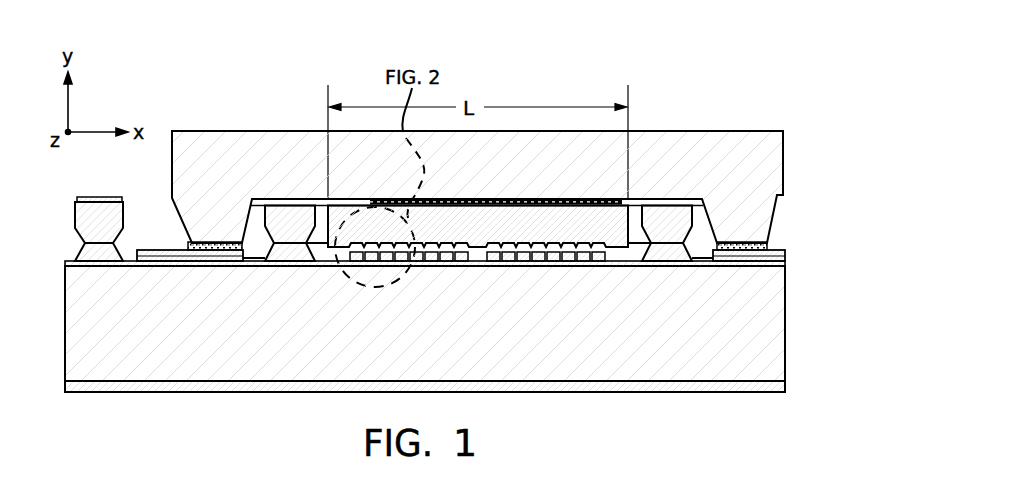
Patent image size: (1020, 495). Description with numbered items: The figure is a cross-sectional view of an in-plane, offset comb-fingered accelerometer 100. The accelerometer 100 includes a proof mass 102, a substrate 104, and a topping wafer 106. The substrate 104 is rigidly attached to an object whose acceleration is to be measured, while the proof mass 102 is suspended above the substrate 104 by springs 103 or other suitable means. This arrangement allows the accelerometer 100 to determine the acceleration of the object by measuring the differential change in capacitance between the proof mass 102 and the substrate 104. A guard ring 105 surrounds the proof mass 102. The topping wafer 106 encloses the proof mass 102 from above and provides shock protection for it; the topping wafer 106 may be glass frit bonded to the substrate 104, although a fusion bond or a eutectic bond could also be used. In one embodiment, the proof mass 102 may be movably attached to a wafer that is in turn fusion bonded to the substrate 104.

The in-plane accelerometer 100 is at (175, 89).
The proof mass 102 is at (561, 212).
The springs 103 is at (320, 208).
The substrate 104 is at (652, 352).
The guard ring 105 is at (277, 210).
The topping wafer 106 is at (717, 148).